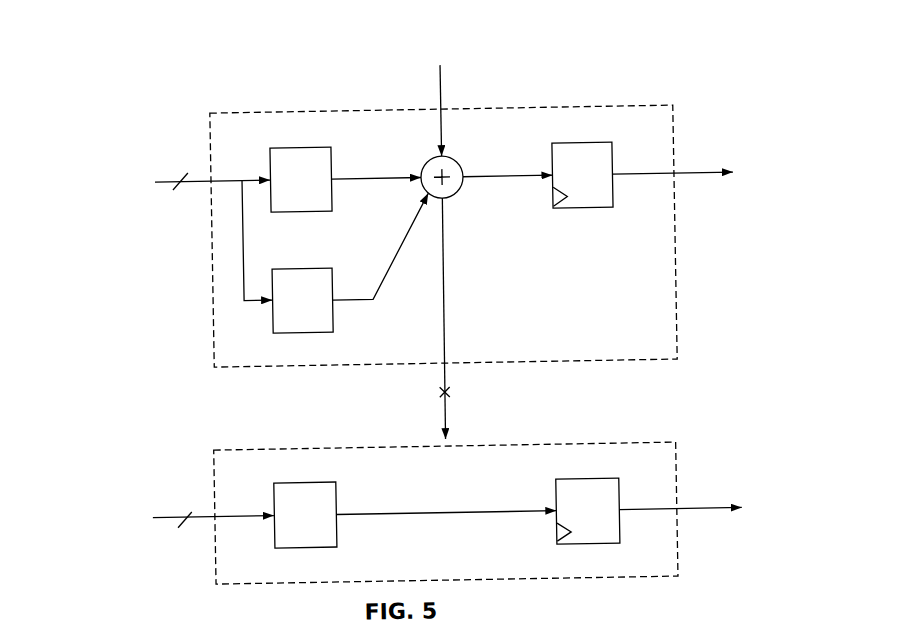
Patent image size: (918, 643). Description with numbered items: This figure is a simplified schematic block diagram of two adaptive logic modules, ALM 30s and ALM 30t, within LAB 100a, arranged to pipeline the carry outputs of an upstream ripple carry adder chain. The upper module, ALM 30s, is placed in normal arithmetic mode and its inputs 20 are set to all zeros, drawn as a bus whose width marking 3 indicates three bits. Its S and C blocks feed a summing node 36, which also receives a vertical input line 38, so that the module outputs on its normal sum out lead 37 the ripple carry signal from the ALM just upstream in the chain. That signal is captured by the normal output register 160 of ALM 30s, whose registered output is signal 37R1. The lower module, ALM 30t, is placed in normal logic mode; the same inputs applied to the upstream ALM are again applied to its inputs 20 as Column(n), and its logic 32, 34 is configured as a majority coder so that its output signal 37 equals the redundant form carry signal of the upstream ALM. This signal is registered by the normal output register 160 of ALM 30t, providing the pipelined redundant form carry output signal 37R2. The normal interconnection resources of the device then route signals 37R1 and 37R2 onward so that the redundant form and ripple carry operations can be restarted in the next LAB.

The LAB 100a is at (175, 40).
The inputs 20 is at (139, 560).
The three-bit bus width 3 is at (182, 338).
The ALM 30s is at (678, 322).
The ALM 30t is at (678, 557).
The logic 32 is at (318, 480).
The logic 34 is at (303, 480).
The adder 36 is at (458, 160).
The sum out lead 37 is at (511, 177).
The signal 37R1 is at (693, 176).
The signal 37R2 is at (690, 513).
The feedback signal 38 is at (446, 85).
The normal output register 160 is at (584, 145).